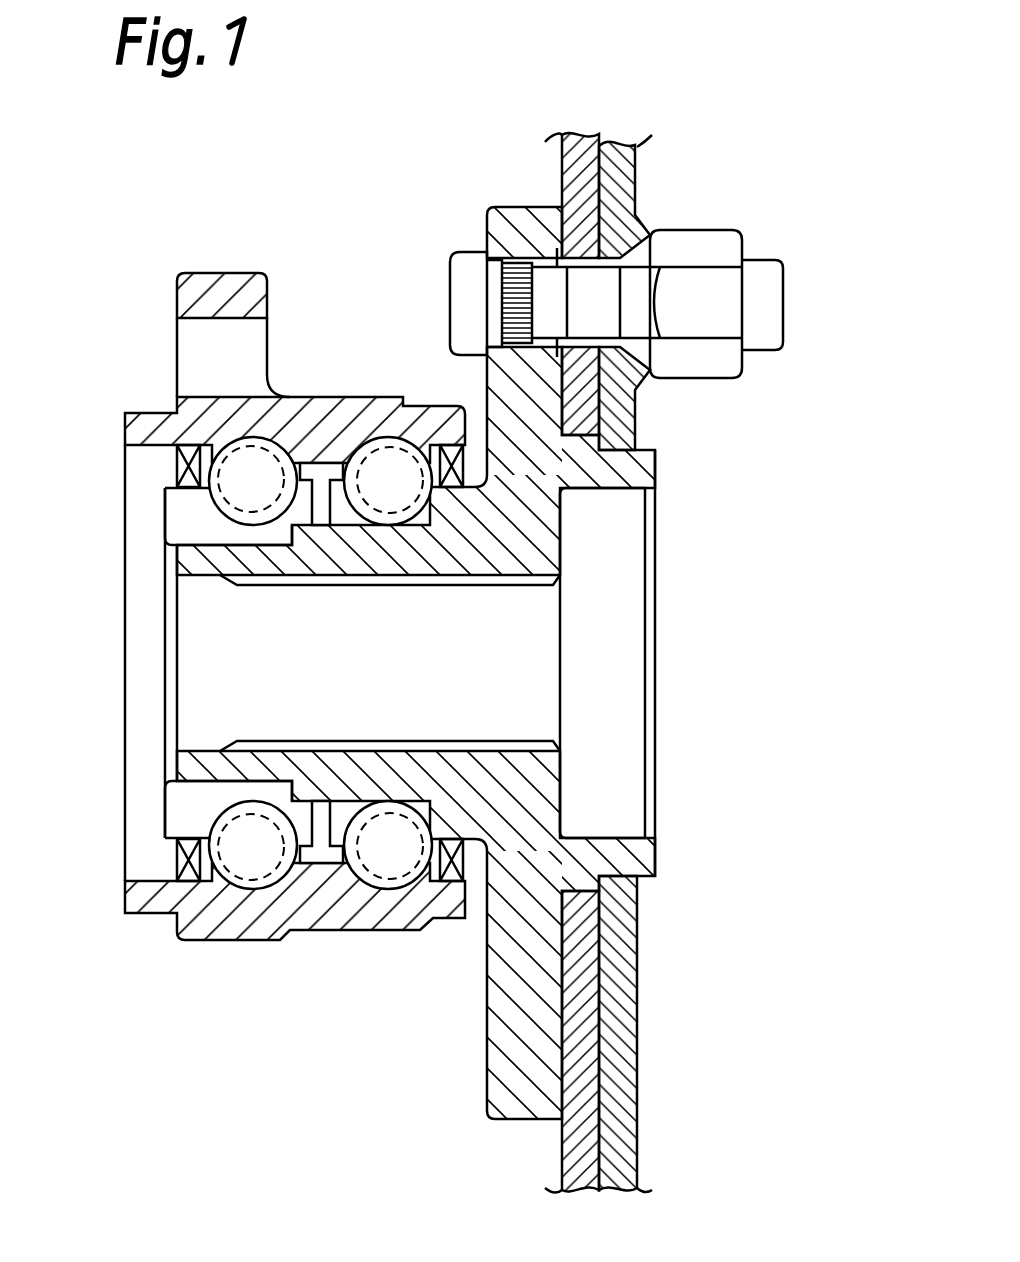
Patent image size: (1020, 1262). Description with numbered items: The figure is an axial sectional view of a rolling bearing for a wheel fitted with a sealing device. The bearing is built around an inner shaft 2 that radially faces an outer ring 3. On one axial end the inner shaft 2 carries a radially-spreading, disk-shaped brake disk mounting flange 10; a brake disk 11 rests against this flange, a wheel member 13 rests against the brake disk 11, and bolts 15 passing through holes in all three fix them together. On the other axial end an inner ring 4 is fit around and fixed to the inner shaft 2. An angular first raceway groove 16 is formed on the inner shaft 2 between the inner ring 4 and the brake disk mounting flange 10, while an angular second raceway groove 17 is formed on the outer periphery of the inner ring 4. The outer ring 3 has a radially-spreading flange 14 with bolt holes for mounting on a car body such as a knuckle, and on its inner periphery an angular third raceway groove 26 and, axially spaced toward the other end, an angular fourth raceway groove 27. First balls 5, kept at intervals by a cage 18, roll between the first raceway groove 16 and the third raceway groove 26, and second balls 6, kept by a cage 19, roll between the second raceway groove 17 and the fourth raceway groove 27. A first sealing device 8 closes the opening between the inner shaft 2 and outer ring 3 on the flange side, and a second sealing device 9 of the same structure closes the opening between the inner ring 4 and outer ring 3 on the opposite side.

The inner shaft 2 is at (517, 546).
The outer ring 3 is at (313, 412).
The inner ring 4 is at (185, 517).
The first balls 5 is at (367, 857).
The second balls 6 is at (238, 855).
The first sealing device 8 is at (565, 485).
The second sealing device 9 is at (207, 453).
The brake disk mounting flange 10 is at (508, 237).
The brake disk 11 is at (570, 175).
The wheel member 13 is at (620, 177).
The flange 14 is at (218, 272).
The bolts 15 is at (768, 304).
The first raceway groove 16 is at (407, 880).
The second raceway groove 17 is at (228, 452).
The cage 18 is at (400, 480).
The cage 19 is at (237, 522).
The third raceway groove 26 is at (363, 440).
The fourth raceway groove 27 is at (257, 880).